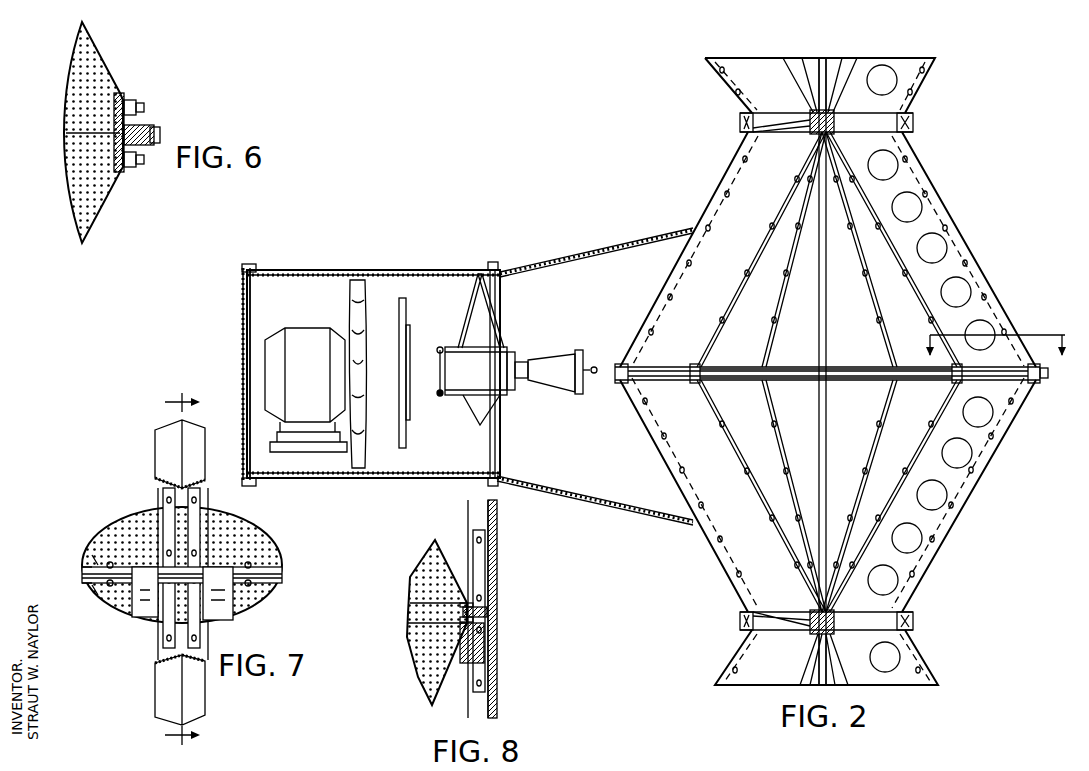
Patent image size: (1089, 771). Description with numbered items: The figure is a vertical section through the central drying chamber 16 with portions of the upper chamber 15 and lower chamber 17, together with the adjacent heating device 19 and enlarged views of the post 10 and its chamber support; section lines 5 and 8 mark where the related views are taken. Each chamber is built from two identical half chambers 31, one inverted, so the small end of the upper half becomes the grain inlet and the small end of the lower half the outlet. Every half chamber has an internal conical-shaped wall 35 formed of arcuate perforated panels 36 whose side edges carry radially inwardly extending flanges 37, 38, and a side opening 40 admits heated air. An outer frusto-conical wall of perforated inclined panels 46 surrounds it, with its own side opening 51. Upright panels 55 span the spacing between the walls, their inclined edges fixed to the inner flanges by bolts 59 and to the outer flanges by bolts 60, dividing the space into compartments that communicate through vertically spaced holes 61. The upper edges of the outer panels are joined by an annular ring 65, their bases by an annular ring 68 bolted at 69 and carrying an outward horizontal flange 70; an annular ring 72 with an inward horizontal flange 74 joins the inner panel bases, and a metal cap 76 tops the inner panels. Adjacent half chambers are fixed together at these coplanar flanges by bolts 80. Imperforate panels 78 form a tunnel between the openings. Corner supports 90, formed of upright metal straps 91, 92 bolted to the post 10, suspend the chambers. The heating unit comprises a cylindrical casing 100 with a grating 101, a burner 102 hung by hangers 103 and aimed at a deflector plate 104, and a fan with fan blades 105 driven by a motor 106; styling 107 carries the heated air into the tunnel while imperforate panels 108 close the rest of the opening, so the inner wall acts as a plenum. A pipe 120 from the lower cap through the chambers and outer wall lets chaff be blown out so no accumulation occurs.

In FIG. 2, the section line 5- 5 is at (989, 336).
In FIG. 7, the section line 8- 8 is at (175, 569).
In FIG. 7, the post 10 is at (195, 448).
In FIG. 8, the post 10 is at (490, 706).
In FIG. 2, the upper drying chamber 15 is at (942, 68).
In FIG. 2, the drying chamber 16 is at (1005, 282).
In FIG. 2, the lower drying chamber 17 is at (930, 655).
In FIG. 2, the heating device 19 is at (510, 266).
In FIG. 2, the half chamber 31 is at (712, 78).
In FIG. 2, the internal conical-shaped wall 35 is at (760, 260).
In FIG. 2, the perforated panels 36 is at (822, 371).
In FIG. 2, the radially inwardly extending flange 37 is at (886, 342).
In FIG. 2, the radially inwardly extending flange 38 is at (778, 470).
In FIG. 2, the side opening 40 is at (712, 338).
In FIG. 7, the perforated inclined panels 46 is at (135, 512).
In FIG. 8, the perforated inclined panels 46 is at (445, 518).
In FIG. 2, the side opening 51 is at (646, 312).
In FIG. 2, the upright panels 55 is at (923, 476).
In FIG. 2, the bolts 59 is at (905, 288).
In FIG. 2, the bolts 60 is at (978, 256).
In FIG. 2, the holes 61 is at (898, 168).
In FIG. 2, the annular ring 65 is at (914, 118).
In FIG. 2, the annular ring 68 is at (1048, 378).
In FIG. 6, the annular ring 68 is at (130, 86).
In FIG. 7, the annular ring 68 is at (90, 560).
In FIG. 6, the bolts 69 is at (140, 105).
In FIG. 7, the bolts 69 is at (108, 542).
In FIG. 8, the bolts 69 is at (445, 606).
In FIG. 6, the horizontal flange 70 is at (160, 134).
In FIG. 7, the horizontal flange 70 is at (84, 567).
In FIG. 8, the horizontal flange 70 is at (490, 614).
In FIG. 2, the annular ring 72 is at (832, 366).
In FIG. 2, the horizontal flange 74 is at (778, 368).
In FIG. 2, the metal cap 76 is at (836, 118).
In FIG. 2, the imperforate panels 78 is at (722, 452).
In FIG. 6, the bolts 80 is at (155, 127).
In FIG. 7, the bolts 80 is at (270, 565).
In FIG. 8, the bolts 80 is at (487, 609).
In FIG. 7, the corner supports 90 is at (140, 608).
In FIG. 8, the corner supports 90 is at (490, 660).
In FIG. 7, the upright metal strap 91 is at (160, 490).
In FIG. 7, the upright metal strap 92 is at (196, 490).
In FIG. 8, the upright metal strap 92 is at (480, 556).
In FIG. 2, the cylindrical casing 100 is at (320, 270).
In FIG. 2, the grating 101 is at (243, 352).
In FIG. 2, the burner 102 is at (490, 350).
In FIG. 2, the hangers 103 is at (490, 302).
In FIG. 2, the deflector plate 104 is at (406, 305).
In FIG. 2, the fan blades 105 is at (365, 280).
In FIG. 2, the motor 106 is at (305, 328).
In FIG. 2, the styling 107 is at (606, 247).
In FIG. 2, the imperforate panels 108 is at (718, 170).
In FIG. 2, the pipe 120 is at (790, 128).